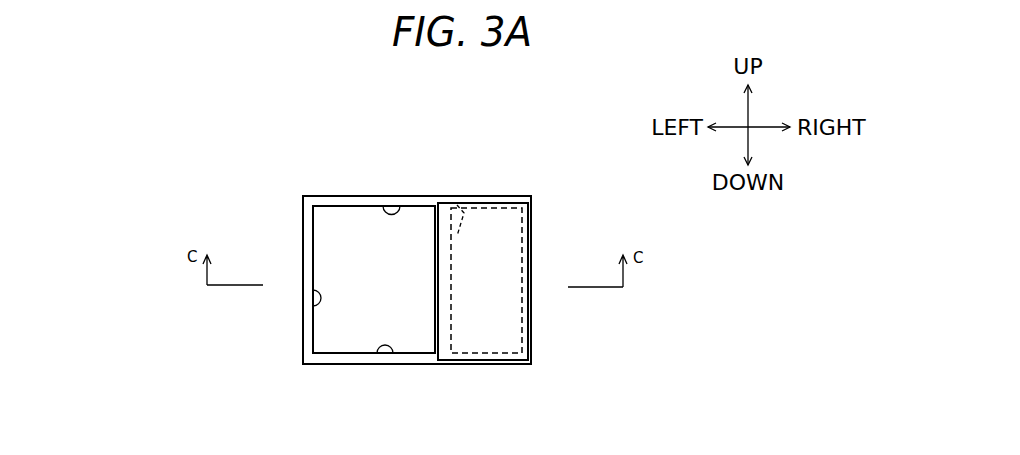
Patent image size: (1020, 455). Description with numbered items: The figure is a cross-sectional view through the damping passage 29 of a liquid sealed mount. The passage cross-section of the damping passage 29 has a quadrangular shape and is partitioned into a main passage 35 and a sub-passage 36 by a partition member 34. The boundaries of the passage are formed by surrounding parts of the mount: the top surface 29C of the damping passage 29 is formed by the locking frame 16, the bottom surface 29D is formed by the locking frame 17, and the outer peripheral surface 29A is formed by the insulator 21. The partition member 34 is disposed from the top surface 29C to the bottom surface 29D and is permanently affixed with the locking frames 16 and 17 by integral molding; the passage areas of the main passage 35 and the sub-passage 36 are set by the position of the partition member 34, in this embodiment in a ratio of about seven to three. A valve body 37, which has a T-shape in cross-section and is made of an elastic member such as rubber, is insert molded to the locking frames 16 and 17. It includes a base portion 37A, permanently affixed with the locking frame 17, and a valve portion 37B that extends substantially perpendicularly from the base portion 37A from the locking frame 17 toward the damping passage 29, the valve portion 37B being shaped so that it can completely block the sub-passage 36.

The locking frame 16 is at (342, 196).
The locking frame 17 is at (343, 364).
The insulator 21 is at (302, 229).
The damping passage 29 is at (415, 124).
The outer peripheral surface 29A is at (303, 310).
The top surface 29C is at (401, 198).
The bottom surface 29D is at (393, 356).
The partition member 34 is at (457, 205).
The main passage 35 is at (384, 291).
The sub-passage 36 is at (493, 291).
The valve body 37 is at (619, 130).
The base portion 37A is at (530, 244).
The valve portion 37B is at (498, 230).